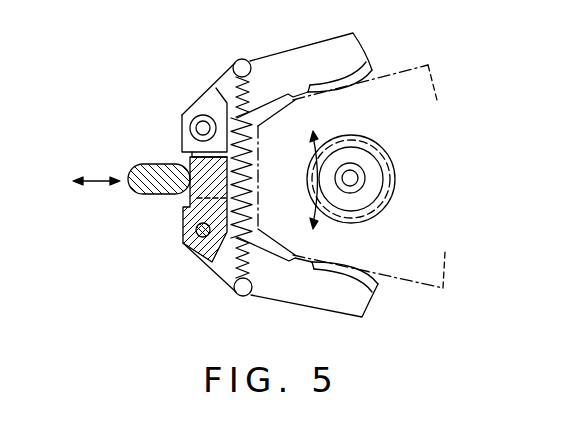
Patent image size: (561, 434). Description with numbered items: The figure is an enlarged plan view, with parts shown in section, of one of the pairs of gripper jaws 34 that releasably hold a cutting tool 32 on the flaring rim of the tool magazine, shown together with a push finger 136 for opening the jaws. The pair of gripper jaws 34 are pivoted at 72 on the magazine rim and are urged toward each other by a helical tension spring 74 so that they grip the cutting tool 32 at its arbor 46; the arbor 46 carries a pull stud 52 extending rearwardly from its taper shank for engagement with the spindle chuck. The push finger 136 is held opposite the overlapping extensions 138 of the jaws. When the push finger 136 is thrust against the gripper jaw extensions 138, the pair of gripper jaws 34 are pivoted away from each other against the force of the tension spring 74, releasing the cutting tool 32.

The gripper jaws 34 is at (295, 55).
The helical tension spring 74 is at (233, 93).
The pivot 72 is at (202, 126).
The push finger 136 is at (132, 165).
The overlapping extensions 138 is at (195, 168).
The cutting tool 32 is at (395, 162).
The arbor 46 is at (375, 182).
The pull stud 52 is at (352, 188).